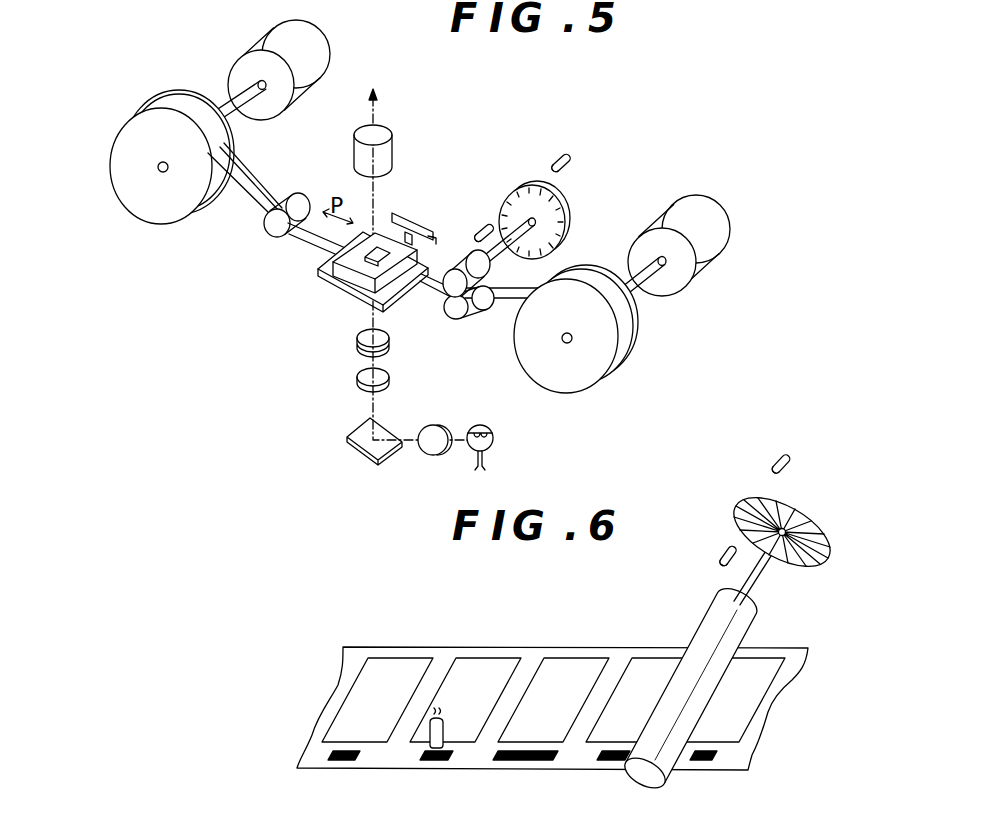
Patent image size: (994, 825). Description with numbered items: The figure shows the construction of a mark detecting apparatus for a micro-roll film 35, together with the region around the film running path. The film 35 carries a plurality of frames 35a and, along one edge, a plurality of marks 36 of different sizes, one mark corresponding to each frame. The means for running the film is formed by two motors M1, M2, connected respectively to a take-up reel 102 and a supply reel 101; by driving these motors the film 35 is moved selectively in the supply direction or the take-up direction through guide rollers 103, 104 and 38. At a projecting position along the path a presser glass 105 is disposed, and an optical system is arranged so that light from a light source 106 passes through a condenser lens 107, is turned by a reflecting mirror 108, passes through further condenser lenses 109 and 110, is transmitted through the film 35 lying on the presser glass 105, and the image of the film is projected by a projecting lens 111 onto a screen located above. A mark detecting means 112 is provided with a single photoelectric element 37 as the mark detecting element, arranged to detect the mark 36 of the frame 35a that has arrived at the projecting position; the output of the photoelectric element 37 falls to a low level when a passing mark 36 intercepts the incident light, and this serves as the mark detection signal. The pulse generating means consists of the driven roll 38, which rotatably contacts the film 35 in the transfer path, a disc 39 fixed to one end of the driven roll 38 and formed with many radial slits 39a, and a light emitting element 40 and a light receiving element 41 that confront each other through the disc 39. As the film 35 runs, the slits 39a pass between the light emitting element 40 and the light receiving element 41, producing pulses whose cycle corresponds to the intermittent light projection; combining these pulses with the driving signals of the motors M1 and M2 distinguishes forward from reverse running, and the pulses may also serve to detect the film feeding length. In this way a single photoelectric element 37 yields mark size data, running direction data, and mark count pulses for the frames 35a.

In FIG. 5, the micro-roll film 35 is at (255, 180).
In FIG. 6, the micro-roll film 35 is at (424, 640).
In FIG. 6, the frames 35a is at (493, 665).
In FIG. 6, the marks 36 is at (341, 761).
In FIG. 6, the photoelectric element 37 is at (442, 723).
In FIG. 5, the driven roll 38 is at (450, 293).
In FIG. 6, the driven roll 38 is at (682, 767).
In FIG. 5, the disc 39 is at (565, 232).
In FIG. 6, the disc 39 is at (806, 491).
In FIG. 6, the radial slits 39a is at (808, 529).
In FIG. 5, the light emitting element 40 is at (478, 225).
In FIG. 6, the light emitting element 40 is at (722, 556).
In FIG. 5, the light receiving element 41 is at (560, 150).
In FIG. 6, the light receiving element 41 is at (780, 457).
In FIG. 5, the supply reel 101 is at (183, 219).
In FIG. 5, the take-up reel 102 is at (600, 383).
In FIG. 5, the guide roller 103 is at (268, 230).
In FIG. 5, the guide roller 104 is at (463, 325).
In FIG. 5, the presser glass 105 is at (337, 285).
In FIG. 5, the light source 106 is at (491, 432).
In FIG. 5, the condenser lens 107 is at (436, 425).
In FIG. 5, the reflecting mirror 108 is at (350, 447).
In FIG. 5, the condenser lens 109 is at (355, 378).
In FIG. 5, the condenser lens 110 is at (355, 343).
In FIG. 5, the projecting lens 111 is at (392, 147).
In FIG. 5, the mark detecting means 112 is at (382, 233).
In FIG. 5, the motor M1 is at (697, 279).
In FIG. 5, the motor M2 is at (323, 60).